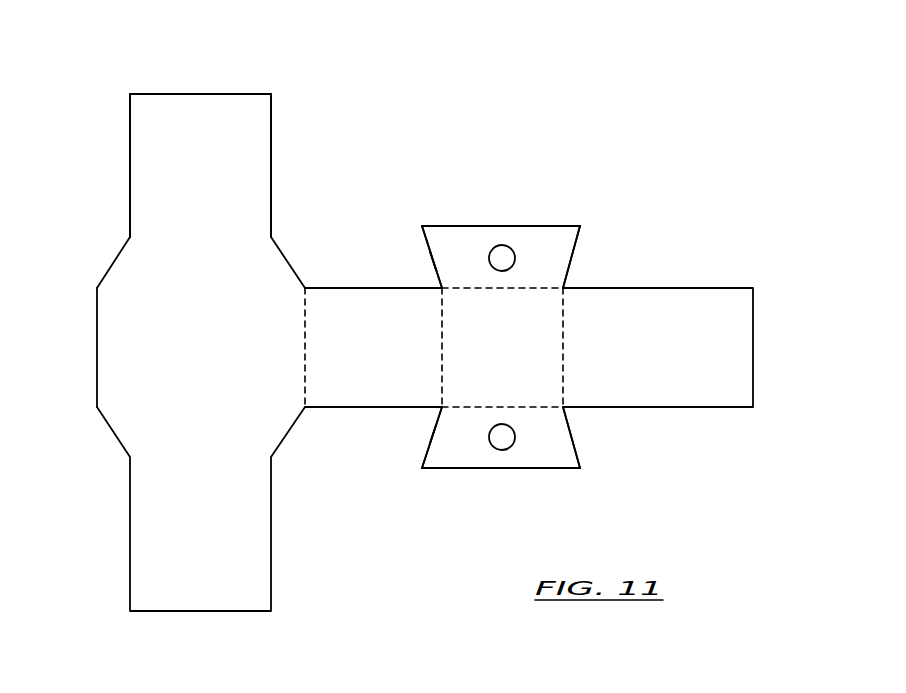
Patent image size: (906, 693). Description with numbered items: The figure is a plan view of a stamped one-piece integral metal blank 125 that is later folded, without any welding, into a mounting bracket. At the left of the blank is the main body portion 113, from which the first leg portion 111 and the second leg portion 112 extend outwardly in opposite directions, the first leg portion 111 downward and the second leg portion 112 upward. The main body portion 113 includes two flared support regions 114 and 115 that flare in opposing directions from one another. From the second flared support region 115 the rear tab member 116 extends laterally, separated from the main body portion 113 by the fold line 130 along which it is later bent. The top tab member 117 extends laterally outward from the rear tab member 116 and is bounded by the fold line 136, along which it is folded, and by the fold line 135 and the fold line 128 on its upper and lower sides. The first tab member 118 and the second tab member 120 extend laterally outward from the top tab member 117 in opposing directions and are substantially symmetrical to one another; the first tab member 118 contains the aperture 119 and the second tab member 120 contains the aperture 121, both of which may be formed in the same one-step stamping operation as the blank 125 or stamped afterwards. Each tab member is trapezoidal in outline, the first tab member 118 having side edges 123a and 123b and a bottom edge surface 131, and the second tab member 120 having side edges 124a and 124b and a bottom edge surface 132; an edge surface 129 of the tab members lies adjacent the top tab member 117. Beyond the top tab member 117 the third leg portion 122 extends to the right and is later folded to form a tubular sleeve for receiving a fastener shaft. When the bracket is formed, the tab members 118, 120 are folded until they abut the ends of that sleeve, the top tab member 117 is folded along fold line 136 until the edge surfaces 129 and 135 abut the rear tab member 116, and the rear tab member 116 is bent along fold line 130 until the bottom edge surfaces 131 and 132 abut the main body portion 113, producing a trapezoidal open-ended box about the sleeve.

The first leg portion 111 is at (172, 552).
The second leg portion 112 is at (210, 125).
The main body portion 113 is at (175, 352).
The flared support region 114 is at (127, 270).
The second flared support region 115 is at (268, 282).
The rear tab member 116 is at (323, 327).
The top tab member 117 is at (540, 310).
The first tab member 118 is at (543, 455).
The aperture 119 is at (502, 437).
The second tab member 120 is at (553, 240).
The aperture 121 is at (502, 258).
The third leg portion 122 is at (715, 332).
The side edge of lower tab 123a is at (572, 457).
The side edge of lower tab 123b is at (437, 470).
The side edge of upper tab 124a is at (555, 238).
The side edge of upper tab 124b is at (441, 224).
The one-piece integral metal blank 125 is at (676, 132).
The fold line 128 is at (513, 402).
The edge surface 129 is at (428, 250).
The fold line 130 is at (305, 357).
The bottom edge surface 131 is at (475, 468).
The bottom edge surface 132 is at (538, 226).
The edge surface 135 is at (480, 283).
The fold line 136 is at (440, 376).